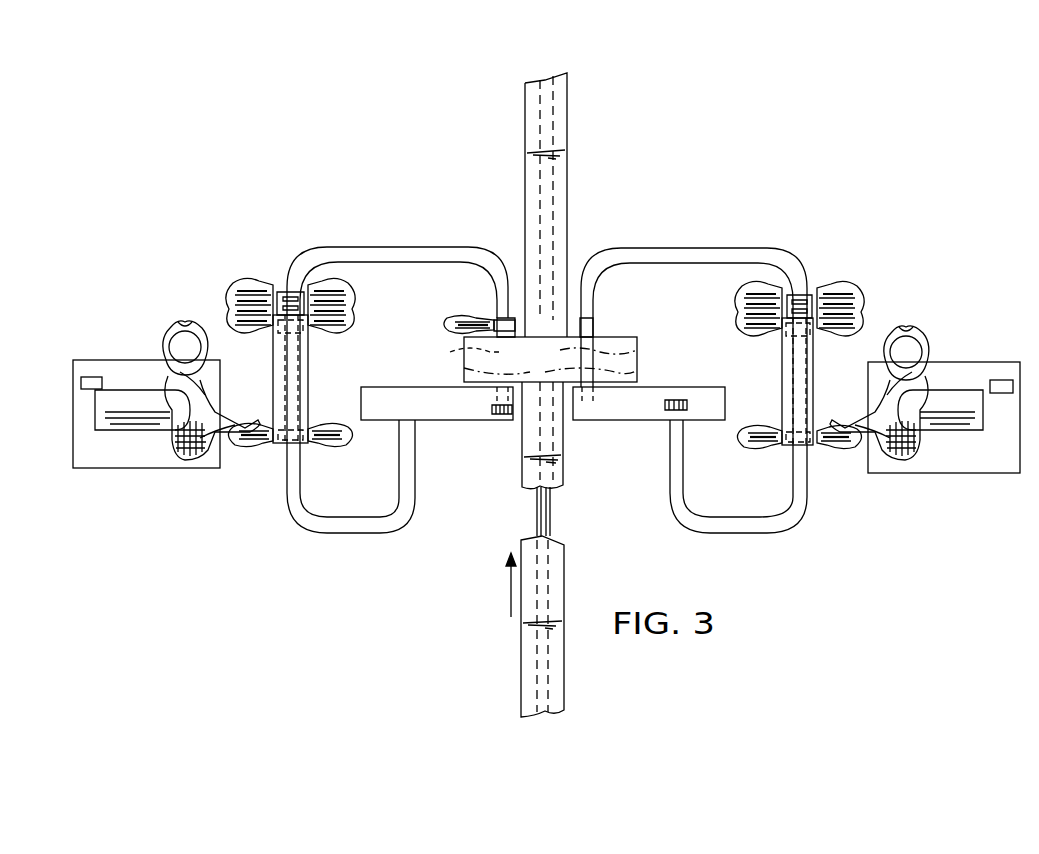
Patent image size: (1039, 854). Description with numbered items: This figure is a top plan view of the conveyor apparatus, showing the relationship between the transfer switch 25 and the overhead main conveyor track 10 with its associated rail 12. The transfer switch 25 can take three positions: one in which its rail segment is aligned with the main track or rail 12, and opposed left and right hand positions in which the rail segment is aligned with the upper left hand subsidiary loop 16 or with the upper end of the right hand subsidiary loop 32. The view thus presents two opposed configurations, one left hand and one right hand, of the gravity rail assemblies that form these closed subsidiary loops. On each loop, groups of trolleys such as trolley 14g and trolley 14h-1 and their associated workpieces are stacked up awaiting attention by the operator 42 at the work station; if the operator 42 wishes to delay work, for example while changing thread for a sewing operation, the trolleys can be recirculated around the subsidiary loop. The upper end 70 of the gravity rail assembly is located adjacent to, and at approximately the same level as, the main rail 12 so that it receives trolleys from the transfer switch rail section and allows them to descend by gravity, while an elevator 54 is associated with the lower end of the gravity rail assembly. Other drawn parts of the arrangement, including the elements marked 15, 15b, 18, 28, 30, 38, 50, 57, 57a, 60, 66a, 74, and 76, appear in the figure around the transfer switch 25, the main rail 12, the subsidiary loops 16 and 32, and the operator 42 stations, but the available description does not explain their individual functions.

The main conveyor track 10 is at (564, 572).
The rail 12 is at (552, 512).
The direction arrow 15 is at (509, 592).
The block 15b is at (588, 318).
The upper left hand subsidiary loop 16 is at (401, 359).
The block 18 is at (624, 345).
The transfer switch 25 is at (681, 316).
The tube 28 is at (443, 247).
The right tube 30 is at (800, 468).
The right hand subsidiary loop 32 is at (765, 237).
The rack 38 is at (306, 365).
The operator 42 is at (165, 336).
The button 50 is at (92, 377).
The elevator 54 is at (458, 412).
The comb element 57 is at (492, 407).
The comb element 57a is at (663, 400).
The right plate 60 is at (598, 418).
The clamp block 66a is at (500, 318).
The upper end of gravity rail assembly 70 is at (485, 262).
The operator hand 74 is at (213, 440).
The lower clamp 76 is at (262, 448).
The trolley 14g is at (448, 324).
The trolley 14h-1 is at (378, 295).